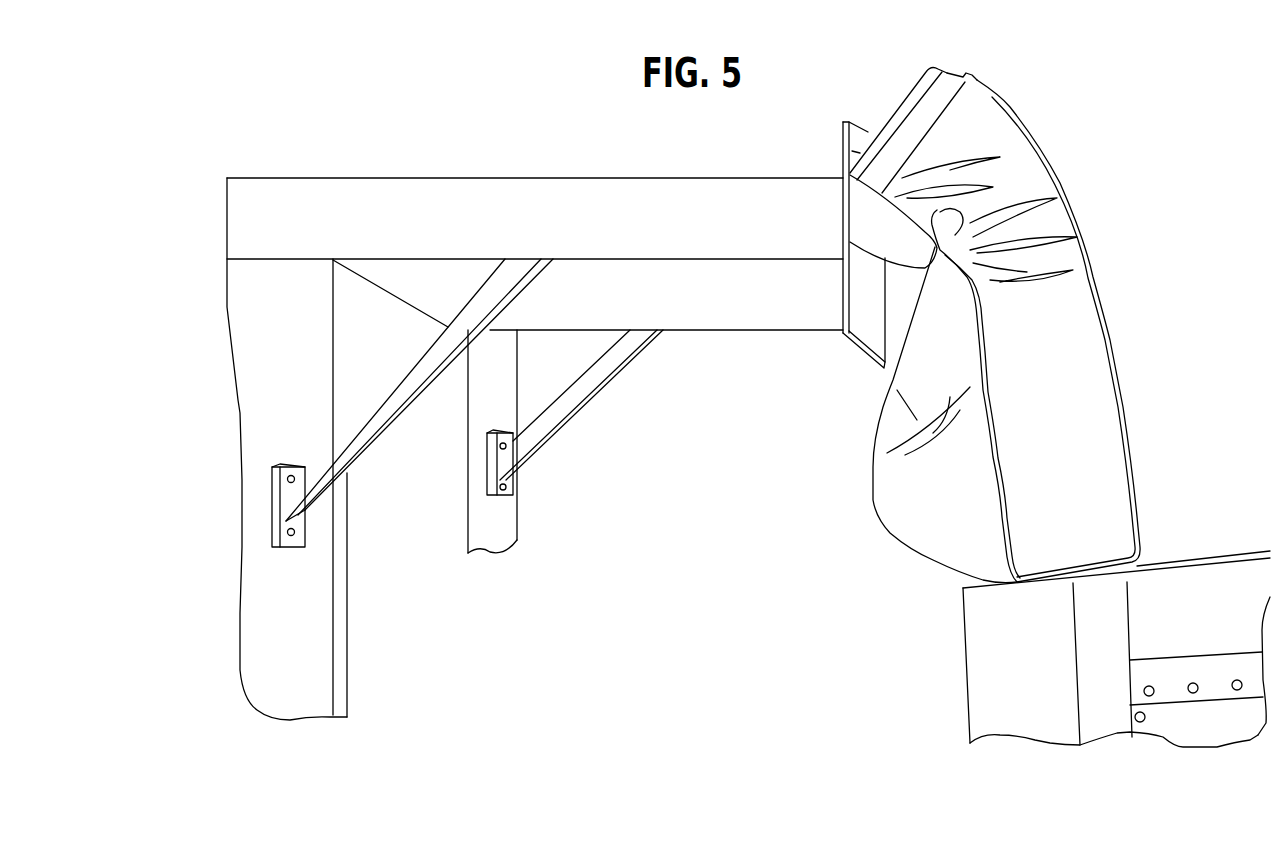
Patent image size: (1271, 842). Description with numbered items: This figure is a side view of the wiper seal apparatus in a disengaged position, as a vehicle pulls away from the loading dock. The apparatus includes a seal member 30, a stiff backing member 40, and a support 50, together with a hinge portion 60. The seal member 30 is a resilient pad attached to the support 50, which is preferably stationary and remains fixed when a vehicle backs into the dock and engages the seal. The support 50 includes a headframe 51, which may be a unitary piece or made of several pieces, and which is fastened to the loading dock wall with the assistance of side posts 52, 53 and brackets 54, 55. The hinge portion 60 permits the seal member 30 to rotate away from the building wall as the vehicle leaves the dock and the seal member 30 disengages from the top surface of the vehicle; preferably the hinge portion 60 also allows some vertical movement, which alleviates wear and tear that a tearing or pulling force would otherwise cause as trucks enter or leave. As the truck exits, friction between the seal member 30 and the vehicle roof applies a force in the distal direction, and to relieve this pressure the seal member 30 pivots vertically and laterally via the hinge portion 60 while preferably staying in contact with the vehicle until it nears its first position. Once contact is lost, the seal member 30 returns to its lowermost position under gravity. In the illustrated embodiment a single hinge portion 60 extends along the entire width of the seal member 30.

The seal member 30 is at (1155, 180).
The stiff backing member 40 is at (843, 148).
The support 50 is at (715, 378).
The headframe 51 is at (565, 187).
The side post 52 is at (334, 455).
The side post 53 is at (597, 367).
The bracket 54 is at (295, 540).
The bracket 55 is at (502, 495).
The hinge portion 60 is at (867, 125).